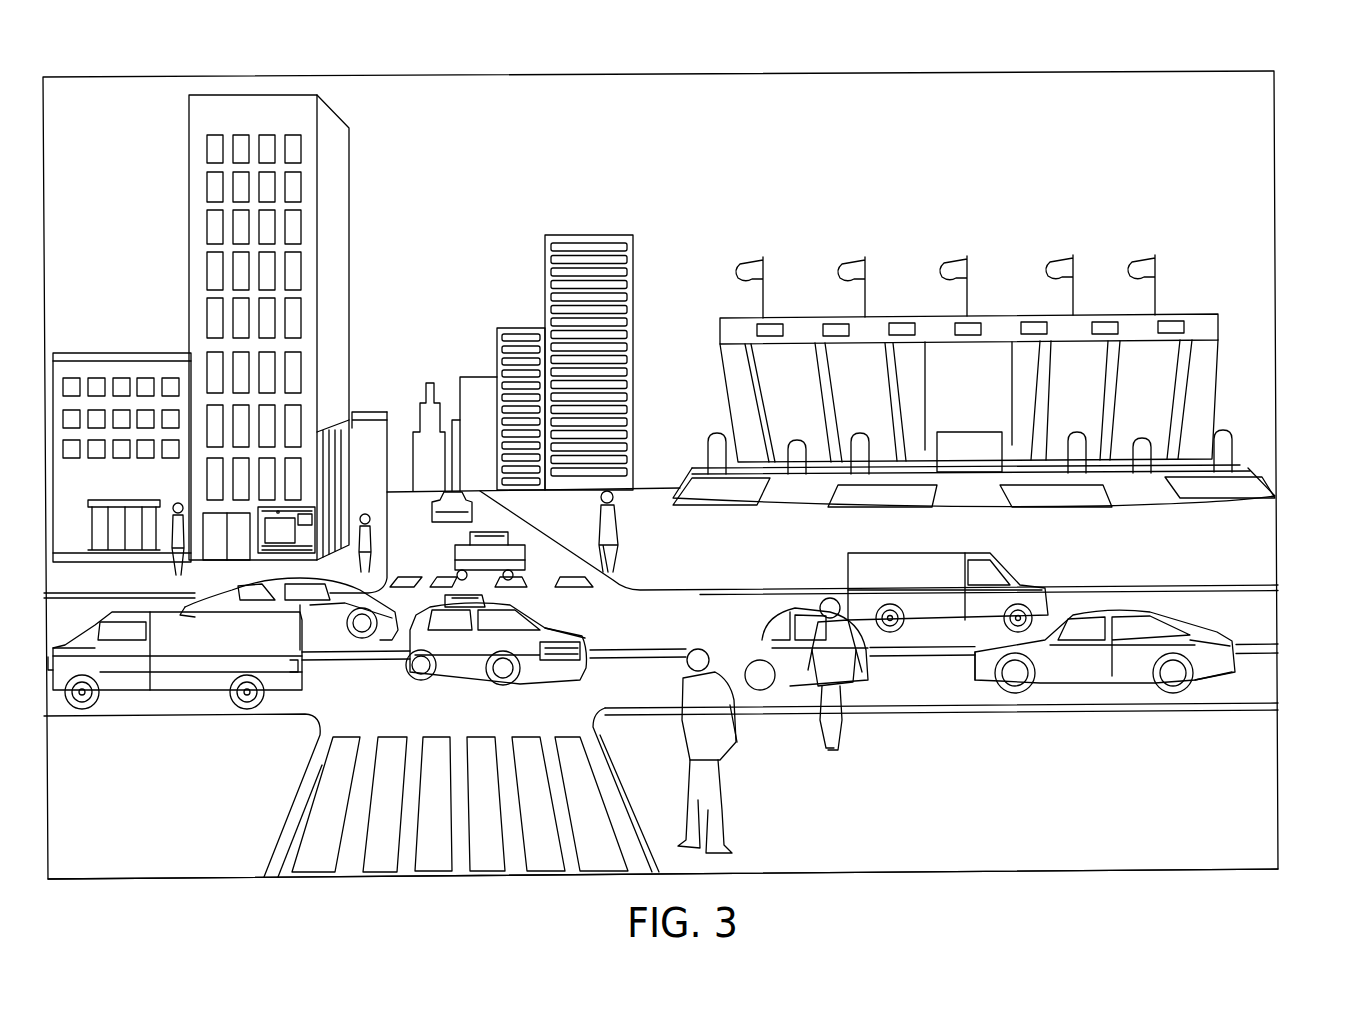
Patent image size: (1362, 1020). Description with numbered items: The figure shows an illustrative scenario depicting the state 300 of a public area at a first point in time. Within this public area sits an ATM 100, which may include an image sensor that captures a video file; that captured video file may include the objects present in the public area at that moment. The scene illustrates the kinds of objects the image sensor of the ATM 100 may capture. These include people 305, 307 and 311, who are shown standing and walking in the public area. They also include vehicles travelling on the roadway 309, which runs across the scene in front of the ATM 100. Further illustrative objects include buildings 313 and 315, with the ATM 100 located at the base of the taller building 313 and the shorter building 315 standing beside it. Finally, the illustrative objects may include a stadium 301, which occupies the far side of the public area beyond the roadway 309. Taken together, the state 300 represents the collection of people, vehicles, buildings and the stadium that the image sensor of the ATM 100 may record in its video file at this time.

The state 300 is at (140, 64).
The ATM 100 is at (306, 507).
The stadium 301 is at (1246, 438).
The people 305 is at (736, 745).
The people 307 is at (845, 722).
The roadway 309 is at (1246, 624).
The people 311 is at (622, 535).
The buildings 313 is at (352, 213).
The buildings 315 is at (113, 353).